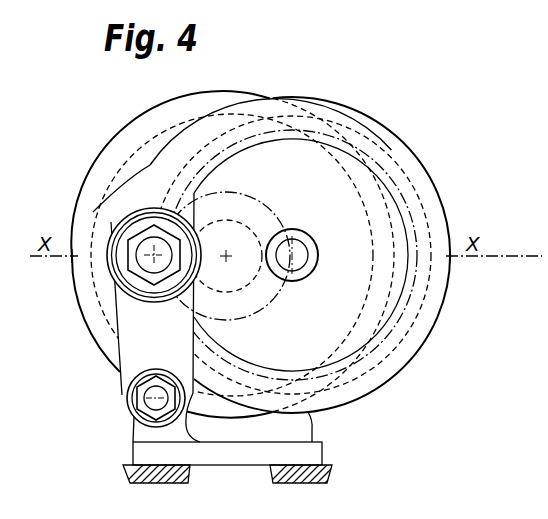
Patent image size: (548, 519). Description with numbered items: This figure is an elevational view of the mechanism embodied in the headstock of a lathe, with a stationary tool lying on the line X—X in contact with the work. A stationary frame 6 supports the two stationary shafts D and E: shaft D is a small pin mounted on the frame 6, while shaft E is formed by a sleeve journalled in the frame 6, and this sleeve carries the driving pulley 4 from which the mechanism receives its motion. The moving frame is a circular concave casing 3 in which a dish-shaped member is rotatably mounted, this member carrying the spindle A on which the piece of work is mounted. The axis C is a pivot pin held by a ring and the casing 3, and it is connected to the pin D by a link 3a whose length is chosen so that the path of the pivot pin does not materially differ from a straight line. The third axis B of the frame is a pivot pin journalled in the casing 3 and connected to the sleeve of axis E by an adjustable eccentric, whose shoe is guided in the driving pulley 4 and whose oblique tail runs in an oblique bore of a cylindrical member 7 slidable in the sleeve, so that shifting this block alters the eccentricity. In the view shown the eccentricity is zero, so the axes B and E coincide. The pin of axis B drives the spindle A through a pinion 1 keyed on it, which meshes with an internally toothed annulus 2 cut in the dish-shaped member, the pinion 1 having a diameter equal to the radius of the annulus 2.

The pinion 1 is at (278, 299).
The internally toothed annulus 2 is at (263, 133).
The casing 3 is at (377, 391).
The link 3a is at (115, 357).
The driving pulley 4 is at (245, 97).
The stationary frame 6 is at (231, 447).
The cylindrical member 7 is at (239, 294).
The spindle A is at (295, 253).
The third axis B is at (231, 248).
The stationary shaft E is at (238, 256).
The axis C is at (150, 257).
The stationary shaft D is at (147, 401).